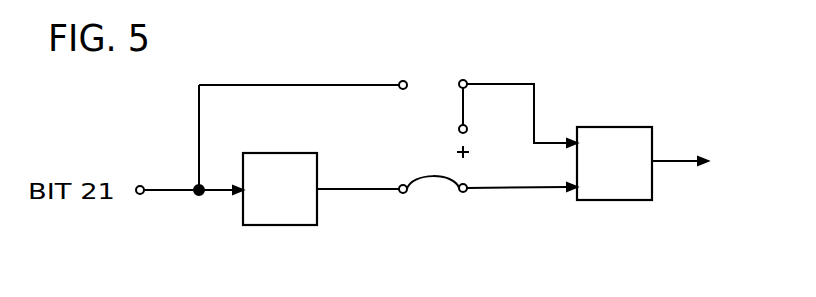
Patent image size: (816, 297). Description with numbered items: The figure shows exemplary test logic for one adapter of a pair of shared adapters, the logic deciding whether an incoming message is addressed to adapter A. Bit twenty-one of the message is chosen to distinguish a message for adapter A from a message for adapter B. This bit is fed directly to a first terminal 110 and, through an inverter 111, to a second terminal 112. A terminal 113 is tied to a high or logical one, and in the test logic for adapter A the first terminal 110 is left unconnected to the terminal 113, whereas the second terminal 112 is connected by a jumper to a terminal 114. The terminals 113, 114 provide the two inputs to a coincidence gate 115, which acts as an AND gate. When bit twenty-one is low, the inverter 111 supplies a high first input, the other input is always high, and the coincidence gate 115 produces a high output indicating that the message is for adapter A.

The first terminal 110 is at (403, 81).
The inverter 111 is at (292, 153).
The second terminal 112 is at (403, 193).
The terminal 113 is at (463, 80).
The terminal 114 is at (463, 192).
The coincidence gate 115 is at (612, 127).